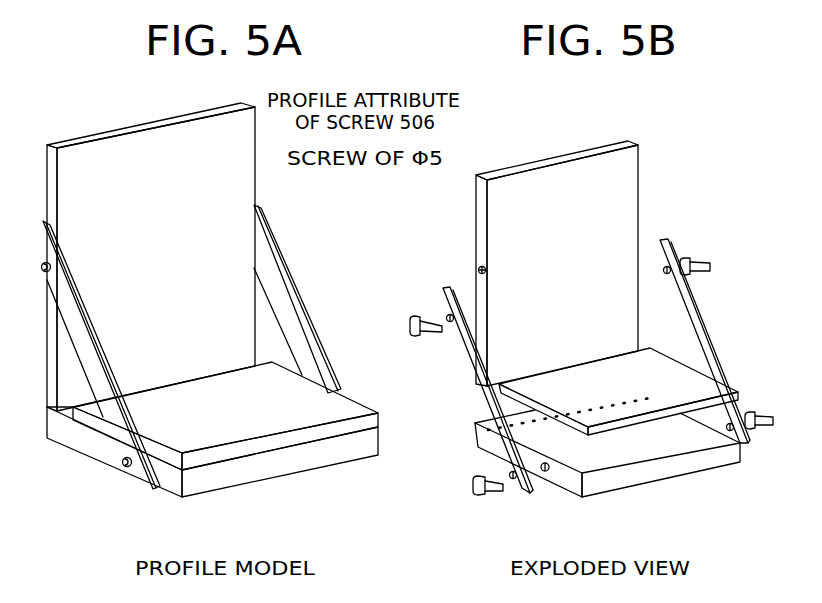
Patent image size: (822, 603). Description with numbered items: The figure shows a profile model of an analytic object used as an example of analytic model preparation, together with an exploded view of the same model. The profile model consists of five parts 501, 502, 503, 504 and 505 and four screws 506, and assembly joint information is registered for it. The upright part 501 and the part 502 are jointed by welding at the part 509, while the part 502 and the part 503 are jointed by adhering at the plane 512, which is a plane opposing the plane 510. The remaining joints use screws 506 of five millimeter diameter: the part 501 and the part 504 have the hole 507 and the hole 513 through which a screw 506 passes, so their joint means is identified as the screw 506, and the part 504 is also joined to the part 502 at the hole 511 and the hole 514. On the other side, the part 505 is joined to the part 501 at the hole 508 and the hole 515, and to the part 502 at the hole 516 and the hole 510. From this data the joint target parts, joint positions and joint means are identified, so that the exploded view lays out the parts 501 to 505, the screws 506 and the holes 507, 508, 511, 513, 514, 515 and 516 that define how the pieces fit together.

In FIG. 5A, the part 501 is at (105, 192).
In FIG. 5A, the part 502 is at (248, 470).
In FIG. 5A, the part 503 is at (343, 430).
In FIG. 5A, the part 504 is at (102, 390).
In FIG. 5A, the part 505 is at (295, 343).
In FIG. 5A, the screw 506 is at (122, 395).
In FIG. 5B, the hole 507 is at (480, 270).
In FIG. 5B, the hole 508 is at (642, 222).
In FIG. 5B, the part 509 is at (508, 390).
In FIG. 5B, the plane 510 is at (697, 433).
In FIG. 5B, the hole 511 is at (547, 473).
In FIG. 5B, the plane 512 is at (625, 420).
In FIG. 5B, the hole 513 is at (443, 333).
In FIG. 5B, the hole 514 is at (512, 480).
In FIG. 5B, the hole 515 is at (687, 283).
In FIG. 5B, the hole 516 is at (743, 447).